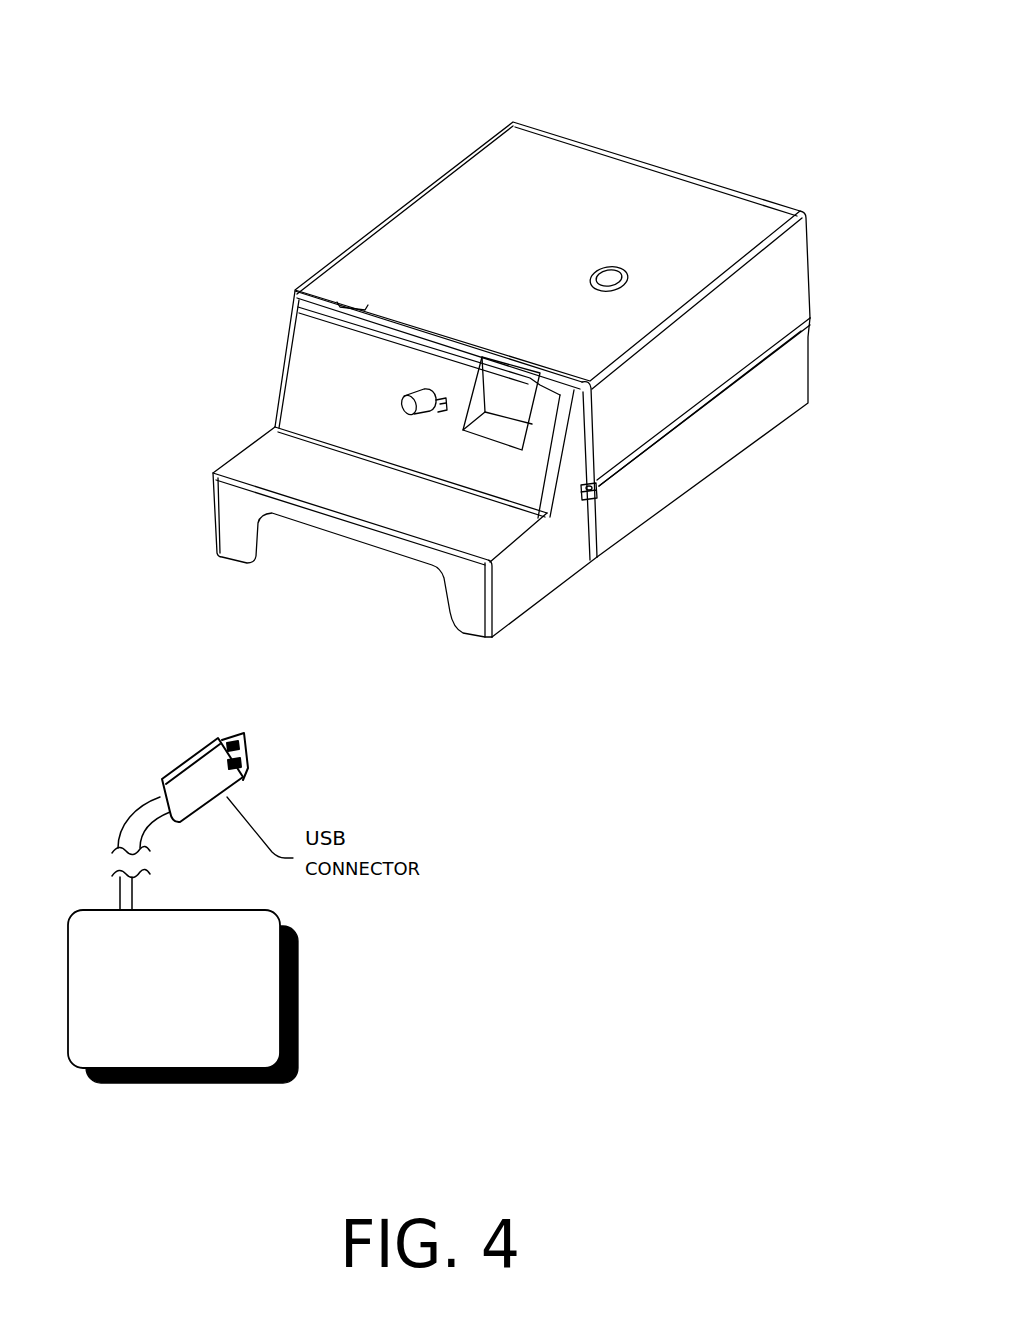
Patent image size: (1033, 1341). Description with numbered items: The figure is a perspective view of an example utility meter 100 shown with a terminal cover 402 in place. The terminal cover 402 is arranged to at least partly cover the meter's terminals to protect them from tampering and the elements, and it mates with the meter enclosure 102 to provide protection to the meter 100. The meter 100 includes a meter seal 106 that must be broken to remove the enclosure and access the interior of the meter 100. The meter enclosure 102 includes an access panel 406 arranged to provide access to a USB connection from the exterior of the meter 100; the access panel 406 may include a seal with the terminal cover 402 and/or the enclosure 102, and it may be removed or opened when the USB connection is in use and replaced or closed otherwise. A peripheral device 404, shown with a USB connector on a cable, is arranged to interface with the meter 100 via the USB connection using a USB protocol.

The meter 100 is at (672, 52).
The meter enclosure 102 is at (478, 192).
The meter seal 106 is at (404, 407).
The terminal cover 402 is at (513, 593).
The peripheral device 404 is at (183, 996).
The access panel 406 is at (508, 407).